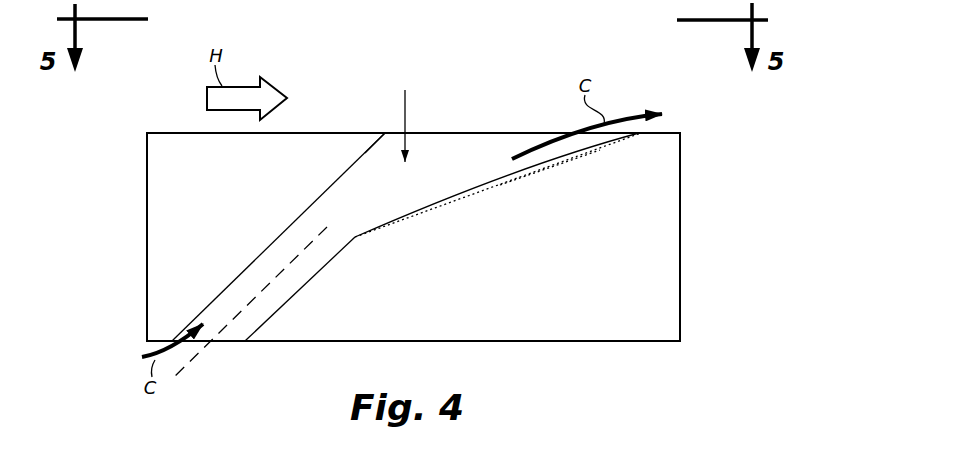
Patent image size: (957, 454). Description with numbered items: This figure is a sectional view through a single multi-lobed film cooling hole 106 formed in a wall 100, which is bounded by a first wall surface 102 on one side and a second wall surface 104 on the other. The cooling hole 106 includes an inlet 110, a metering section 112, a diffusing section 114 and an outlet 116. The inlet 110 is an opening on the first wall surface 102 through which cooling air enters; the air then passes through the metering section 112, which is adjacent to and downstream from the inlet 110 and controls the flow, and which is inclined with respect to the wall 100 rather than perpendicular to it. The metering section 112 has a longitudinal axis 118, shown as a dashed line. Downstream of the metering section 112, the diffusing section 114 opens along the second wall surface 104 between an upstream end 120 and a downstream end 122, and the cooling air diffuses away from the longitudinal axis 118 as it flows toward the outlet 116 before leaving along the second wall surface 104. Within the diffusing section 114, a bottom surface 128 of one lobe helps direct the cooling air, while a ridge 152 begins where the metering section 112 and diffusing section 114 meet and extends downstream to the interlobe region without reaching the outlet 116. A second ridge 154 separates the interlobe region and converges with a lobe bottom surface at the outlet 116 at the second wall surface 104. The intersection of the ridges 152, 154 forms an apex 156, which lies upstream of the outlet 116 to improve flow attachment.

The wall 100 is at (740, 196).
The first wall surface 102 is at (656, 341).
The second wall surface 104 is at (178, 133).
The cooling hole 106 is at (322, 195).
The inlet 110 is at (232, 341).
The metering section 112 is at (283, 295).
The diffusing section 114 is at (405, 115).
The outlet 116 is at (483, 133).
The longitudinal axis 118 is at (176, 374).
The upstream end 120 is at (383, 133).
The downstream end 122 is at (650, 135).
The bottom surface 128 is at (498, 186).
The ridge 152 is at (470, 192).
The ridge 154 is at (580, 152).
The apex 156 is at (551, 160).